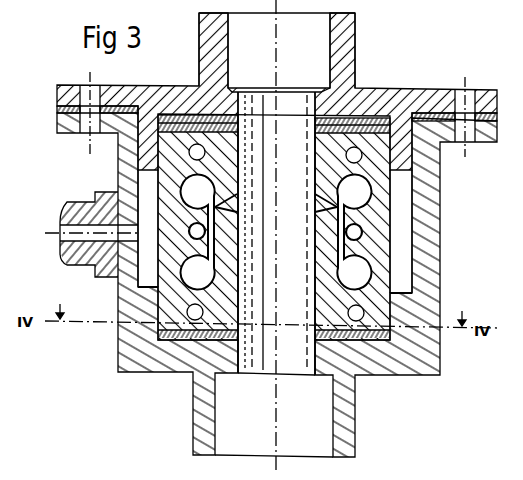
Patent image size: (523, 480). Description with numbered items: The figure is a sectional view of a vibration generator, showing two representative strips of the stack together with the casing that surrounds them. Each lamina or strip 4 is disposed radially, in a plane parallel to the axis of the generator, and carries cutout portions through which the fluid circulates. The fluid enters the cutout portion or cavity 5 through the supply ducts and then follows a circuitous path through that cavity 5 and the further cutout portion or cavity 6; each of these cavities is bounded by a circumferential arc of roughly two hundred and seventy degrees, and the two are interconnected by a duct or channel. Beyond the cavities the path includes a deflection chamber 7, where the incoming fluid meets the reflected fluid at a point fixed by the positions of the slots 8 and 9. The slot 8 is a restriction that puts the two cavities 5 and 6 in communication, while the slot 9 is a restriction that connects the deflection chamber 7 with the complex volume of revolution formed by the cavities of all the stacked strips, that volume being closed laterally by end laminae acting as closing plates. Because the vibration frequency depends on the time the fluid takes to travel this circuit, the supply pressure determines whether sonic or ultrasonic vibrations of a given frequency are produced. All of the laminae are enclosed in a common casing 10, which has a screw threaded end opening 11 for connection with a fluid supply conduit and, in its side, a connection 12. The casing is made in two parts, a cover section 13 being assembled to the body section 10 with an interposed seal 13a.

The strip 4 is at (375, 212).
The cavity 5 is at (355, 273).
The cavity 6 is at (353, 195).
The deflection chamber 7 is at (205, 228).
The slot 8 is at (212, 198).
The slot 9 is at (140, 166).
The casing 10 is at (420, 310).
The screw threaded end opening 11 is at (340, 43).
The connection 12 is at (60, 248).
The cover section 13 is at (390, 100).
The seal 13a is at (108, 107).